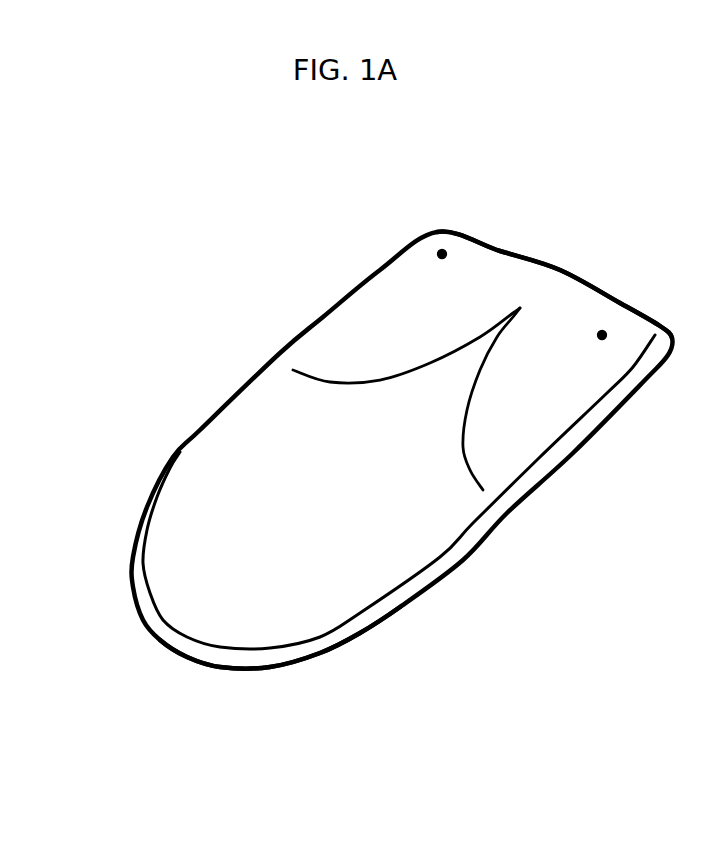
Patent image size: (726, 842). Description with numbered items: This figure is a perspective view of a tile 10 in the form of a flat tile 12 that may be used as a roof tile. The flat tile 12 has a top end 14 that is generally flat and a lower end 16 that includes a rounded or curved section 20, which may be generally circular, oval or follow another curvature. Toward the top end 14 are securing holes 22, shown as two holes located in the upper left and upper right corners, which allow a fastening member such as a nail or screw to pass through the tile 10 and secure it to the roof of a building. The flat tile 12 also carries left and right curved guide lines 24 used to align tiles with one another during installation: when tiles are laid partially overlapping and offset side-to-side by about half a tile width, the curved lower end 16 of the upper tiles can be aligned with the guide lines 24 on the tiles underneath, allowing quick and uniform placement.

The tile 10 is at (177, 133).
The flat tile 12 is at (177, 445).
The top end 14 is at (538, 263).
The lower end 16 is at (173, 627).
The curved section 20 is at (273, 668).
The securing holes 22 is at (438, 250).
The guide lines 24 is at (390, 370).